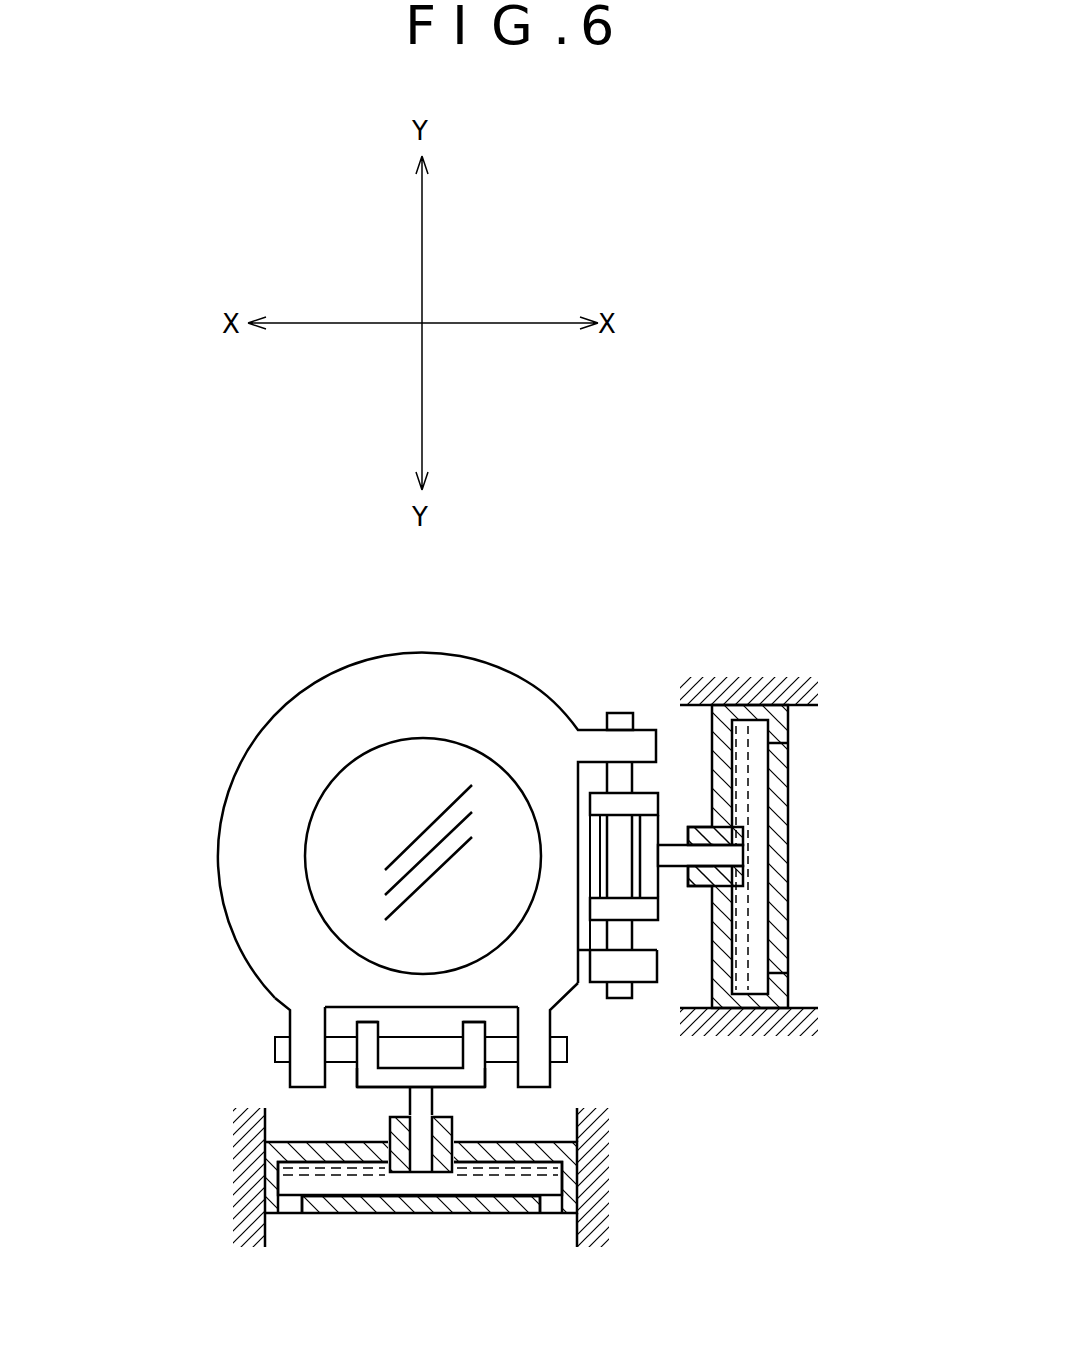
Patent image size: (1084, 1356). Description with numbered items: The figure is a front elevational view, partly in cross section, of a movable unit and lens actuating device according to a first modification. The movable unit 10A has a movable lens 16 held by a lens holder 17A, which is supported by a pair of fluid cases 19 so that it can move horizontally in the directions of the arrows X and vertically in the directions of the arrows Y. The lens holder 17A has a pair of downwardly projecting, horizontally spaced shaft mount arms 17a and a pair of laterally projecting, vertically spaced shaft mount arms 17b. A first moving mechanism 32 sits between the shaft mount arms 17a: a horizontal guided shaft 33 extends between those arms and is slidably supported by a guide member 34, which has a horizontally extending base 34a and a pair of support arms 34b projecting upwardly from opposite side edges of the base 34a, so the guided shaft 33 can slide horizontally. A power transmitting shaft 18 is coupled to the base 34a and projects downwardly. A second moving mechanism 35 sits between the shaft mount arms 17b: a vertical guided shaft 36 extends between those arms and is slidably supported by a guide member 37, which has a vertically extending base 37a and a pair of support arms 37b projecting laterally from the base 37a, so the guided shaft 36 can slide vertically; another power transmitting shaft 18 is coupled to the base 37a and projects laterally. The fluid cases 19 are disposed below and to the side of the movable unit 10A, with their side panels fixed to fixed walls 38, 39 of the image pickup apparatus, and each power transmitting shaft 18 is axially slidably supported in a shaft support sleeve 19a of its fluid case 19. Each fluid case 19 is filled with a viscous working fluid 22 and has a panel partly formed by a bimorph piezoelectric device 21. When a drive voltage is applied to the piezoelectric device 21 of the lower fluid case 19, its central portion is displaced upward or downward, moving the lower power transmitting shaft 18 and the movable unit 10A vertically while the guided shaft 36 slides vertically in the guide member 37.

The movable unit 10A is at (308, 698).
The movable lens 16 is at (377, 768).
The lens holder 17A is at (242, 782).
The shaft mount arms 17a is at (292, 1078).
The shaft mount arms 17b is at (647, 728).
The power transmitting shaft 18 is at (747, 848).
The fluid case 19 is at (785, 967).
The shaft support sleeve 19a is at (388, 1128).
The piezoelectric device 21 is at (783, 888).
The working fluid 22 is at (767, 782).
The first moving mechanism 32 is at (222, 1002).
The horizontal guided shaft 33 is at (508, 1063).
The guide member 34 is at (357, 1090).
The base 34a is at (483, 1087).
The support arms 34b is at (357, 1028).
The second moving mechanism 35 is at (590, 670).
The vertical guided shaft 36 is at (660, 835).
The guide member 37 is at (650, 905).
The base 37a is at (658, 793).
The support arms 37b is at (590, 797).
The fixed wall 38 is at (265, 1215).
The fixed wall 39 is at (803, 705).